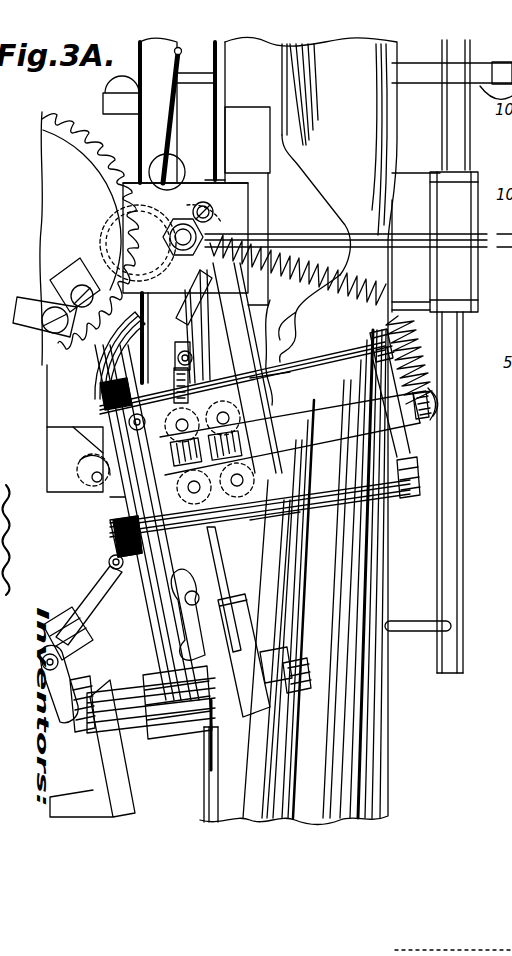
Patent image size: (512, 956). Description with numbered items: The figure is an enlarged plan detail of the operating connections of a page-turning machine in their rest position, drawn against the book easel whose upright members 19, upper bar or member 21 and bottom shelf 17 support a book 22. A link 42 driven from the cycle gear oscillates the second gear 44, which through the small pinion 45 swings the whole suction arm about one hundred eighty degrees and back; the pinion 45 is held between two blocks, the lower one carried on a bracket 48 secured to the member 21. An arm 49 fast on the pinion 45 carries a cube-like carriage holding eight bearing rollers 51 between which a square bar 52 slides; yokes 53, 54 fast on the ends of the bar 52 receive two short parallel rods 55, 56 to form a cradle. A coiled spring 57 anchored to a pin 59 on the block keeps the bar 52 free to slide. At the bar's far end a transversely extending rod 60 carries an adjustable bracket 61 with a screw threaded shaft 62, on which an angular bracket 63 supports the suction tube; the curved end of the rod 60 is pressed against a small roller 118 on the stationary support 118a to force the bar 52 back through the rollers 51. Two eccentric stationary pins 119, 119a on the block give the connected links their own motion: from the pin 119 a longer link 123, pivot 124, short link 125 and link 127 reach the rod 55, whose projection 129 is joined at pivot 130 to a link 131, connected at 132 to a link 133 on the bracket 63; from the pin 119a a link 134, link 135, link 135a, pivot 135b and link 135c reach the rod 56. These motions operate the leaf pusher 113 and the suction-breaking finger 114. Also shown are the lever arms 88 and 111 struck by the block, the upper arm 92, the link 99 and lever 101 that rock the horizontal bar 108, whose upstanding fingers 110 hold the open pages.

The horizontal bottom shelf 17 is at (386, 730).
The rigid upright members 19 is at (204, 790).
The upper bar or member 21 is at (220, 96).
The book 22 is at (284, 67).
The link 42 is at (25, 325).
The second gear 44 is at (80, 122).
The small pinion 45 is at (125, 236).
The bracket 48 is at (270, 203).
The arm 49 is at (295, 319).
The anti-friction or bearing rollers 51 is at (270, 434).
The bar 52 is at (340, 412).
The yoke 53 is at (398, 438).
The yoke 54 is at (102, 444).
The short parallel rod 55 is at (382, 493).
The short parallel rod 56 is at (322, 362).
The coiled spring 57 is at (355, 286).
The pin 59 is at (445, 405).
The transversely extending rod 60 is at (154, 606).
The bracket 61 is at (140, 670).
The screw threaded shaft or rod 62 is at (310, 670).
The bracket of angular form 63 is at (110, 760).
The lever arm 88 is at (176, 106).
The upper arm 92 is at (146, 132).
The link 99 is at (200, 84).
The lever 101 is at (414, 76).
The long horizontally supported bar 108 is at (450, 536).
The pins or fingers 110 is at (412, 621).
The lever arm 111 is at (110, 500).
The subsidiary pin or finger-like member 113 is at (228, 558).
The finger or member 114 is at (412, 238).
The small roller 118 is at (46, 456).
The stationary support 118a is at (92, 476).
The stationary pin 119 is at (247, 206).
The stationary pin 119a is at (232, 172).
The longer link 123 is at (282, 379).
The pivot 124 is at (292, 462).
The short link 125 is at (287, 480).
The link 127 is at (288, 526).
The projection 129 is at (112, 548).
The pivot 130 is at (110, 564).
The link 131 is at (88, 590).
The pivotal connection 132 is at (55, 634).
The link 133 is at (62, 665).
The link 134 is at (203, 268).
The link 135 is at (176, 372).
The link 135a is at (203, 412).
The pivot 135b is at (285, 404).
The link 135c is at (180, 360).